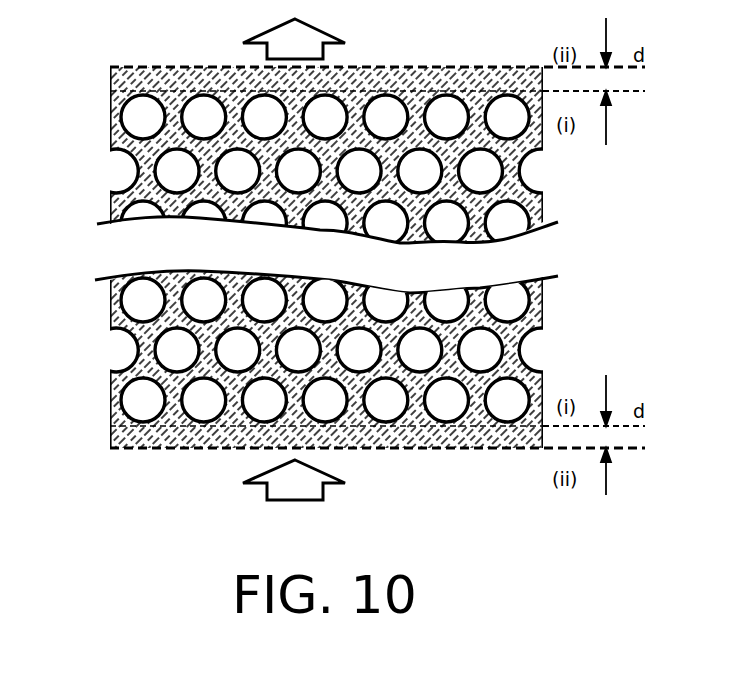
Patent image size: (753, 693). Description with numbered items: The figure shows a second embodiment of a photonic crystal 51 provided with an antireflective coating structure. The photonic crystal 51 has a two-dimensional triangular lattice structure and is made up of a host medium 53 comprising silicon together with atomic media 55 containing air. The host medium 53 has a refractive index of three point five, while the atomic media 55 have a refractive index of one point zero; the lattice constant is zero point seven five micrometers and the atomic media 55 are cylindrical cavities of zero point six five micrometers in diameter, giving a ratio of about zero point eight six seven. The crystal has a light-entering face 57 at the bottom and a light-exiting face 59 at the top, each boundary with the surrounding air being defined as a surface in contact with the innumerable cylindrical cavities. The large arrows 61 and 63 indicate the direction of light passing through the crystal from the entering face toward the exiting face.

The photonic crystal 51 is at (162, 249).
The host medium 53 is at (110, 414).
The atomic media 55 is at (175, 172).
The light-entering face 57 is at (185, 447).
The light-exiting face 59 is at (200, 108).
The arrow indicating direction 61 is at (321, 481).
The arrow indicating direction 63 is at (321, 39).